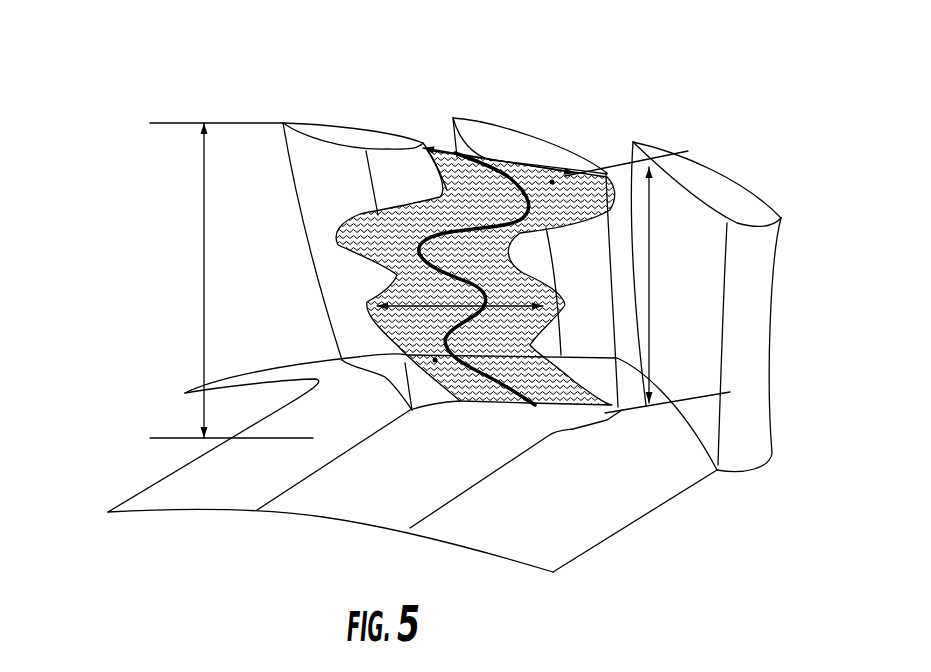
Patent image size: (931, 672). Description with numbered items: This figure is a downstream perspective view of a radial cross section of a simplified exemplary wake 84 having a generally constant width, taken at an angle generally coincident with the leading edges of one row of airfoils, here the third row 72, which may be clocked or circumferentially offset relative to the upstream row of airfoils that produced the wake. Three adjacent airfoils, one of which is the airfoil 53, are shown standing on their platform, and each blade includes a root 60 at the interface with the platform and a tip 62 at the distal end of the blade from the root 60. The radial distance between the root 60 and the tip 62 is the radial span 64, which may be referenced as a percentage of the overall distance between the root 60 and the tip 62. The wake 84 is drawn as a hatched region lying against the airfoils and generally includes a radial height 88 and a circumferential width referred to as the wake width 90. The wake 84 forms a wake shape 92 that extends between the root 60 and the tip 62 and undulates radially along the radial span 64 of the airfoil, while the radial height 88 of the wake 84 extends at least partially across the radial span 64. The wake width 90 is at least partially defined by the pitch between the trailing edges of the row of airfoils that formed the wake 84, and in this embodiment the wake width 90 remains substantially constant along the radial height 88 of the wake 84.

The third row 72 is at (230, 75).
The airfoil 53 is at (762, 263).
The root 60 is at (611, 425).
The tip 62 is at (603, 175).
The radial span 64 is at (650, 290).
The wake 84 is at (560, 173).
The radial height 88 is at (204, 222).
The wake width 90 is at (442, 150).
The wake shape 92 is at (398, 386).